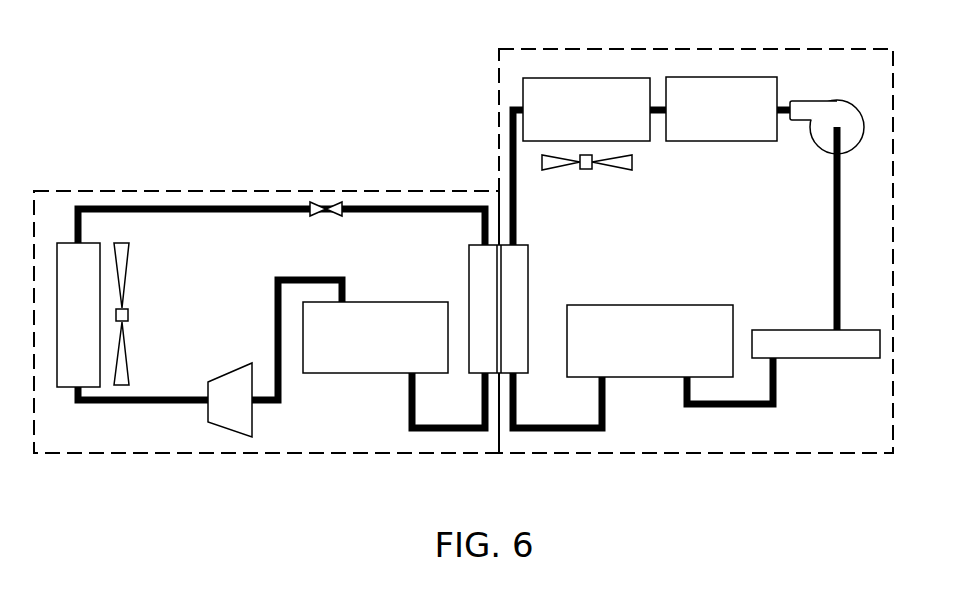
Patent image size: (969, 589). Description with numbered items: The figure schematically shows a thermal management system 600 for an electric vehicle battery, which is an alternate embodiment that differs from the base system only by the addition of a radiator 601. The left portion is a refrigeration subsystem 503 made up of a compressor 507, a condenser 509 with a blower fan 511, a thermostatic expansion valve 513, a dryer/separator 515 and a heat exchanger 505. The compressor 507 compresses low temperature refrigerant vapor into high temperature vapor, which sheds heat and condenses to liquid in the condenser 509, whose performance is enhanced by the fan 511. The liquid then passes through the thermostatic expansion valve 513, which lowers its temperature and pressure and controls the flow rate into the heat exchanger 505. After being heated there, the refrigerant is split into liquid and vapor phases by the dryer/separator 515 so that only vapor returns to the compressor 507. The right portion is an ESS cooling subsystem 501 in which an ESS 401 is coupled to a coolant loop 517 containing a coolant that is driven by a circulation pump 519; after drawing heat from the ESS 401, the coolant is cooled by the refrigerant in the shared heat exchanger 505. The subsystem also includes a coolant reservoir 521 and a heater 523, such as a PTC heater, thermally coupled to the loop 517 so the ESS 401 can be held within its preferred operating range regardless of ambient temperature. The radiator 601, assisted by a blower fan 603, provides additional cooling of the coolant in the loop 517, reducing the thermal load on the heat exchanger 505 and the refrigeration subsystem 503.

The thermal management system 600 is at (257, 83).
The ESS cooling subsystem 501 is at (784, 44).
The refrigeration subsystem 503 is at (180, 186).
The heat exchanger 505 is at (469, 272).
The compressor 507 is at (230, 405).
The condenser 509 is at (62, 388).
The fan 511 is at (130, 315).
The thermostatic expansion valve 513 is at (326, 203).
The dryer/separator 515 is at (412, 300).
The coolant loop 517 is at (833, 221).
The circulation pump 519 is at (827, 127).
The coolant reservoir 521 is at (650, 305).
The heater 523 is at (857, 358).
The radiator 601 is at (548, 78).
The blower fan 603 is at (586, 170).
The ESS 401 is at (724, 143).